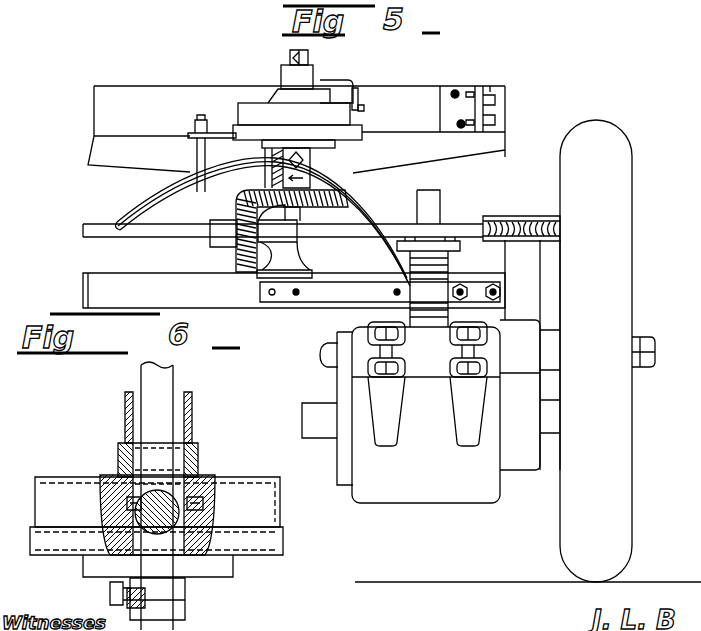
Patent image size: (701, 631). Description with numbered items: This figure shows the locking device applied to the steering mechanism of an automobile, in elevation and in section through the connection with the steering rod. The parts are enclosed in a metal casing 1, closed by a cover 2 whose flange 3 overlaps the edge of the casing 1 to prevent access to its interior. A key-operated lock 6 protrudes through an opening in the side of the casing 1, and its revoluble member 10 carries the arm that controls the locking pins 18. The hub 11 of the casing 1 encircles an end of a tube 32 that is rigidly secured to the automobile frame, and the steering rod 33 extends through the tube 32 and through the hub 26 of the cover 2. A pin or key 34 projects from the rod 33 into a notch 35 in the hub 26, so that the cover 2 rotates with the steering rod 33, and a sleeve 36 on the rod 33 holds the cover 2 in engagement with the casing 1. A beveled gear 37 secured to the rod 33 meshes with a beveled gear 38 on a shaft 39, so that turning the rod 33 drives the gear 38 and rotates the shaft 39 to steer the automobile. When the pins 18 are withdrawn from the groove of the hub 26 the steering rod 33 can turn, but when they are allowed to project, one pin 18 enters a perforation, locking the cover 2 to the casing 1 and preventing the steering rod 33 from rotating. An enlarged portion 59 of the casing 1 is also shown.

In FIG. 5, the casing 1 is at (294, 114).
In FIG. 6, the casing 1 is at (157, 502).
In FIG. 5, the cover 2 is at (341, 141).
In FIG. 6, the cover 2 is at (250, 556).
In FIG. 5, the flange 3 is at (364, 133).
In FIG. 6, the flange 3 is at (285, 531).
In FIG. 5, the lock 6 is at (318, 58).
In FIG. 5, the revoluble member 10 is at (365, 108).
In FIG. 5, the hub 11 is at (280, 92).
In FIG. 6, the pins 18 is at (205, 482).
In FIG. 5, the hub 26 is at (270, 145).
In FIG. 6, the hub 26 is at (210, 562).
In FIG. 5, the tube 32 is at (314, 76).
In FIG. 6, the tube 32 is at (193, 410).
In FIG. 5, the steering rod 33 is at (290, 58).
In FIG. 6, the steering rod 33 is at (157, 496).
In FIG. 6, the pin or key 34 is at (173, 558).
In FIG. 6, the notch 35 is at (128, 552).
In FIG. 5, the sleeve 36 is at (310, 158).
In FIG. 6, the sleeve 36 is at (186, 606).
In FIG. 5, the beveled gear 37 is at (346, 192).
In FIG. 5, the beveled gear 38 is at (240, 256).
In FIG. 5, the shaft 39 is at (322, 232).
In FIG. 5, the enlarged portion 59 is at (340, 91).